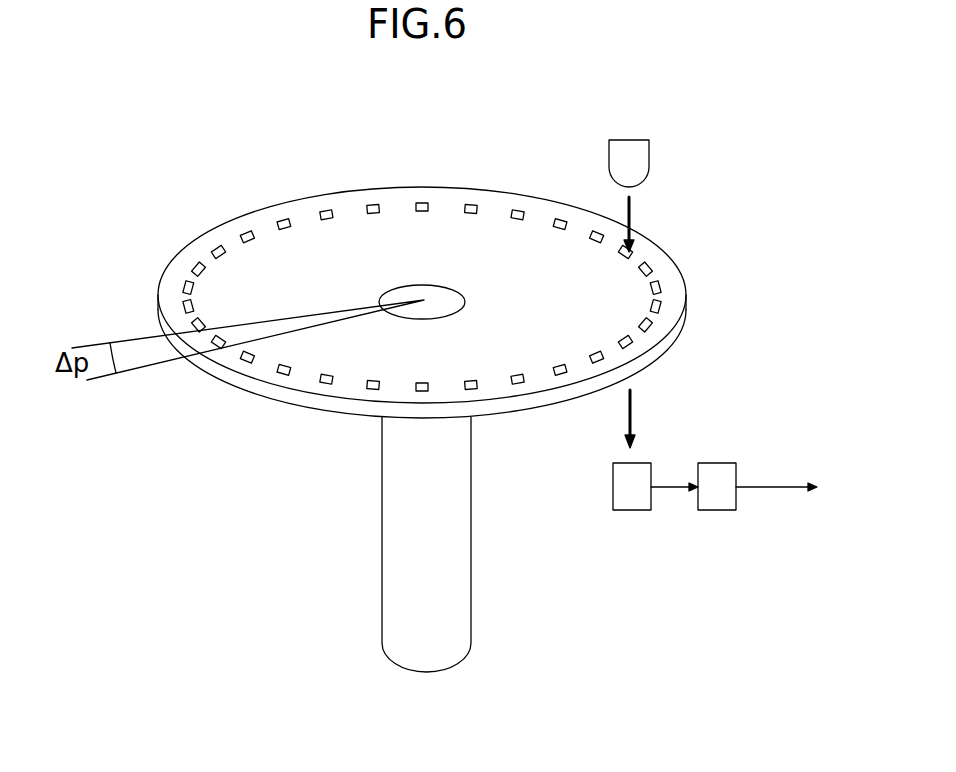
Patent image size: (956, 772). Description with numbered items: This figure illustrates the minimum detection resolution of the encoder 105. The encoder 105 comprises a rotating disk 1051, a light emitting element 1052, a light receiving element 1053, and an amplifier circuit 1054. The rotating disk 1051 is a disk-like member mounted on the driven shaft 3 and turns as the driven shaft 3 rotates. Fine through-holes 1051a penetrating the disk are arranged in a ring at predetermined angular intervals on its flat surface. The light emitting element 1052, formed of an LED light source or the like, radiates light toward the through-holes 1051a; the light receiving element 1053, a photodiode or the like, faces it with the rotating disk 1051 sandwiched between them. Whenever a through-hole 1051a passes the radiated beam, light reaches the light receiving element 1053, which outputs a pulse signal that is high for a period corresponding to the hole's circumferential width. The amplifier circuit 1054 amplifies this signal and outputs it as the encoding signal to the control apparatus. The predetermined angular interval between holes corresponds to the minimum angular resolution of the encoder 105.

The encoder 105 is at (541, 133).
The rotating disk 1051 is at (275, 258).
The through-hole 1051a is at (421, 202).
The light emitting element 1052 is at (650, 156).
The light receiving element 1053 is at (632, 510).
The amplifier circuit 1054 is at (718, 510).
The driven shaft 3 is at (452, 558).